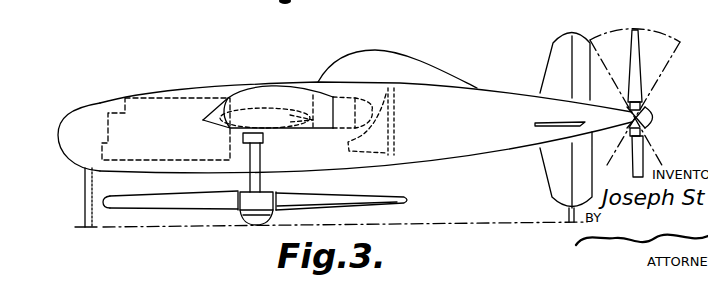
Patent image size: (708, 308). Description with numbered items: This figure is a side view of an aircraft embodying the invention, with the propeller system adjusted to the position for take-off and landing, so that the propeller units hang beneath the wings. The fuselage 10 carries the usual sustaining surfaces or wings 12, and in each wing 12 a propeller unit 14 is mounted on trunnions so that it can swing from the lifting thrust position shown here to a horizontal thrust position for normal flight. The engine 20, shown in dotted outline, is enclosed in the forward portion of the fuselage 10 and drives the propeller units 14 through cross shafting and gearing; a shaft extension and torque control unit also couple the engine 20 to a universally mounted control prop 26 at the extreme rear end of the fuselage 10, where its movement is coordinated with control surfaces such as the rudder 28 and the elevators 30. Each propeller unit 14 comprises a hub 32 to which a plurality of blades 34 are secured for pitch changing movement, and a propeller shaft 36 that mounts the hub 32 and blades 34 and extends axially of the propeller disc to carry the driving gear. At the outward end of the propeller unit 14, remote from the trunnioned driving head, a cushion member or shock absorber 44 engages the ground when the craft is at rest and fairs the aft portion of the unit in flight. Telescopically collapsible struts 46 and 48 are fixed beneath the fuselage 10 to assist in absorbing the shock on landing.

The fuselage 10 is at (432, 158).
The sustaining surface 12 is at (262, 92).
The propeller unit 14 is at (353, 110).
The engine 20 is at (147, 115).
The control prop 26 is at (656, 117).
The rudder 28 is at (578, 40).
The elevator 30 is at (573, 122).
The hub 32 is at (263, 203).
The blade 34 is at (140, 205).
The propeller shaft 36 is at (262, 152).
The shock absorber 44 is at (252, 218).
The telescopically collapsible strut 46 is at (85, 203).
The telescopically collapsible strut 48 is at (568, 214).